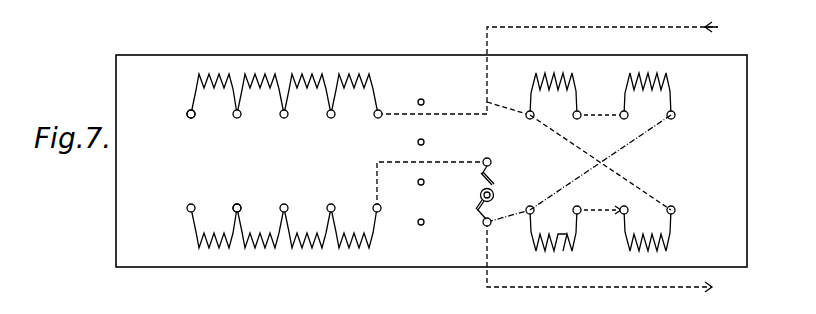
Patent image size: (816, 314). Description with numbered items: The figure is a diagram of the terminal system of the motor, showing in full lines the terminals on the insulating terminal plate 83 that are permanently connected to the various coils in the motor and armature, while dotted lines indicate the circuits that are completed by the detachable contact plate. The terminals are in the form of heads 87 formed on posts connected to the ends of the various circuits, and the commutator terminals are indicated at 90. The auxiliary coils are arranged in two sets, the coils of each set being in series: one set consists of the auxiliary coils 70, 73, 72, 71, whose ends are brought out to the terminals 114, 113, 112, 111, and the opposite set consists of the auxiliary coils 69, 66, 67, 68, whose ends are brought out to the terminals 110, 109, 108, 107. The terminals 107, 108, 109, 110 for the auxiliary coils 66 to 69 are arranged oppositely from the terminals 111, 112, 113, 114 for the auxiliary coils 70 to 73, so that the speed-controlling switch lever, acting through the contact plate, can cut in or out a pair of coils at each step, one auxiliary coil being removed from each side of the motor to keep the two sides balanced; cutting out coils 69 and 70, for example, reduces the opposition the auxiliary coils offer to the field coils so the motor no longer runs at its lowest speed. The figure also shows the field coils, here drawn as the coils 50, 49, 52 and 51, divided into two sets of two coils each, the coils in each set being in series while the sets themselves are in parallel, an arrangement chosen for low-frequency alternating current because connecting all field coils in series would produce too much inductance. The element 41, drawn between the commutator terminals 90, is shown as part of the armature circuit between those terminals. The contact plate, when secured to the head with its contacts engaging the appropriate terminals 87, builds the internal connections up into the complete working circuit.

The auxiliary coil 70 is at (214, 86).
The auxiliary coil 73 is at (260, 86).
The auxiliary coil 72 is at (307, 86).
The auxiliary coil 71 is at (356, 88).
The auxiliary coil 69 is at (214, 237).
The auxiliary coil 66 is at (260, 237).
The auxiliary coil 67 is at (307, 237).
The auxiliary coil 68 is at (356, 235).
The terminal head 87 is at (195, 112).
The auxiliary-coil terminal 114 is at (188, 118).
The auxiliary-coil terminal 113 is at (237, 118).
The auxiliary-coil terminal 112 is at (284, 118).
The auxiliary-coil terminal 111 is at (333, 118).
The auxiliary-coil terminal 110 is at (191, 204).
The auxiliary-coil terminal 109 is at (238, 204).
The auxiliary-coil terminal 108 is at (285, 204).
The auxiliary-coil terminal 107 is at (332, 204).
The commutator terminal 90 is at (490, 159).
The relay coil 41 is at (494, 196).
The resistance 50 is at (576, 80).
The resistance 49 is at (670, 80).
The resistance 52 is at (575, 244).
The resistance 51 is at (669, 244).
The terminal plate 83 is at (615, 162).